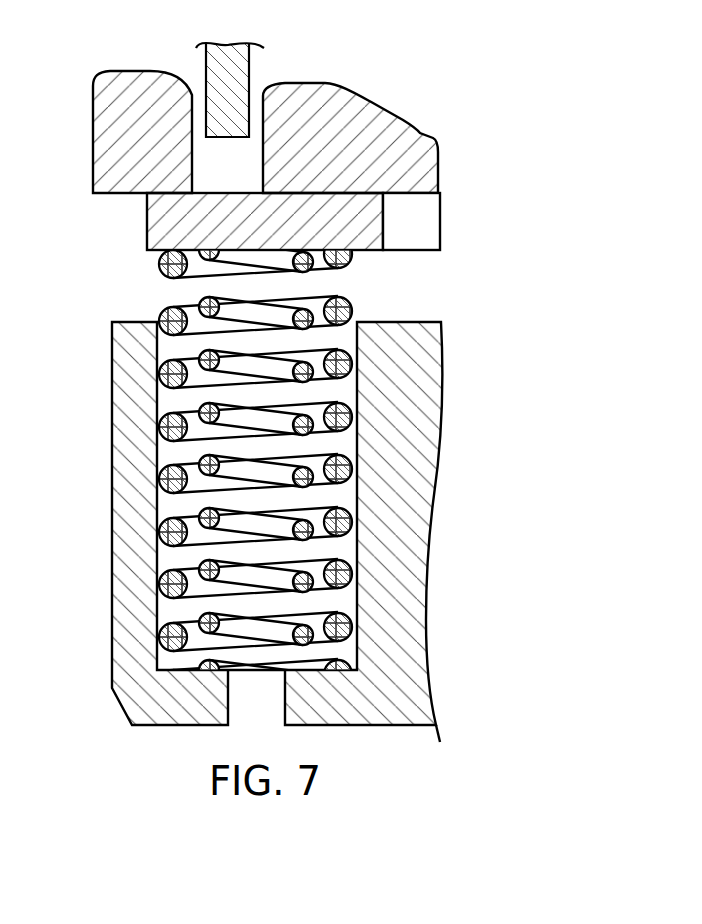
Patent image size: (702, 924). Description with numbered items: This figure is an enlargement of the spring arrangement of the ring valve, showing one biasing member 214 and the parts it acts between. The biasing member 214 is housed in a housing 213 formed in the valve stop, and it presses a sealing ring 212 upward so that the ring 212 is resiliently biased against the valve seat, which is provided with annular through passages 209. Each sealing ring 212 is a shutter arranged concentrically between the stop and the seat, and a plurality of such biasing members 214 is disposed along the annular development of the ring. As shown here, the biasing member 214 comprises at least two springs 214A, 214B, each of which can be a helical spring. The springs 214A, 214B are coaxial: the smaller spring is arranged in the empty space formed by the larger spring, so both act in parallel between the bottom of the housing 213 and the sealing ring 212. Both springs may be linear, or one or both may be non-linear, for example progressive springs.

The annular through passages 209 is at (245, 158).
The sealing ring 212 is at (363, 233).
The housing 213 is at (345, 395).
The biasing member 214 is at (150, 284).
The spring 214A is at (317, 594).
The spring 214B is at (345, 634).